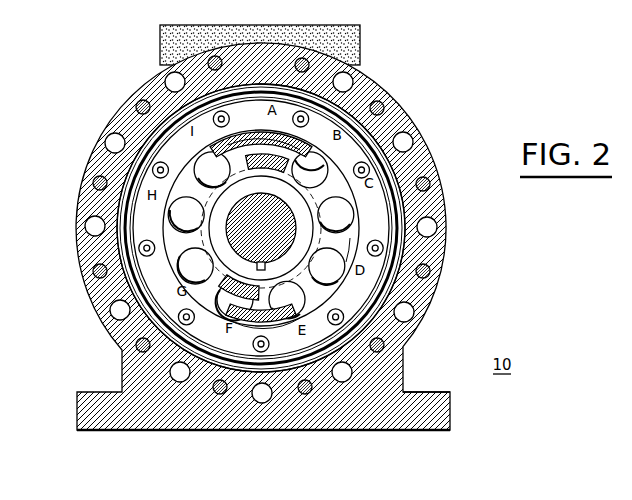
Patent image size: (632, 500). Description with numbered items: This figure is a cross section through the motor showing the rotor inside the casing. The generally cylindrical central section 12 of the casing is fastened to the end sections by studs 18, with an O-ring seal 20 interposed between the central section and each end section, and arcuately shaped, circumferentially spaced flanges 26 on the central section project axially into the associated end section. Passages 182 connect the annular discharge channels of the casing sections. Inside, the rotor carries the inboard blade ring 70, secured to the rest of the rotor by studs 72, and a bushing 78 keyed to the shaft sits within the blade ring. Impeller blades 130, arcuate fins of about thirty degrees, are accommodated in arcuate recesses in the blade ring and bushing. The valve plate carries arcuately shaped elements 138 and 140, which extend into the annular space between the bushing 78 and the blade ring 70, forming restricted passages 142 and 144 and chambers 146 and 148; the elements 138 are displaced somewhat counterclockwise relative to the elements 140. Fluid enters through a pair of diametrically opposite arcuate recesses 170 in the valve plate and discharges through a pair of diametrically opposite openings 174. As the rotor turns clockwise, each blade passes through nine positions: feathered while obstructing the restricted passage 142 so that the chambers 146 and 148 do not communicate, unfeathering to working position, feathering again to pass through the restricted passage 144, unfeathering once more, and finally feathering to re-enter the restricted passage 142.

The central section 12 is at (377, 77).
The studs 18 is at (138, 105).
The O-ring seal 20 is at (408, 314).
The flanges 26 is at (160, 127).
The inboard blade ring 70 is at (152, 184).
The studs 72 is at (137, 163).
The bushing 78 is at (342, 192).
The impeller blade 130 is at (136, 205).
The arcuately shaped element 138 is at (262, 118).
The arcuately shaped element 140 is at (289, 138).
The restricted passage 142 is at (266, 88).
The restricted passage 144 is at (265, 362).
The chamber 146 is at (139, 248).
The chamber 148 is at (342, 245).
The arcuate recesses 170 is at (130, 264).
The openings 174 is at (194, 164).
The passages 182 is at (175, 82).